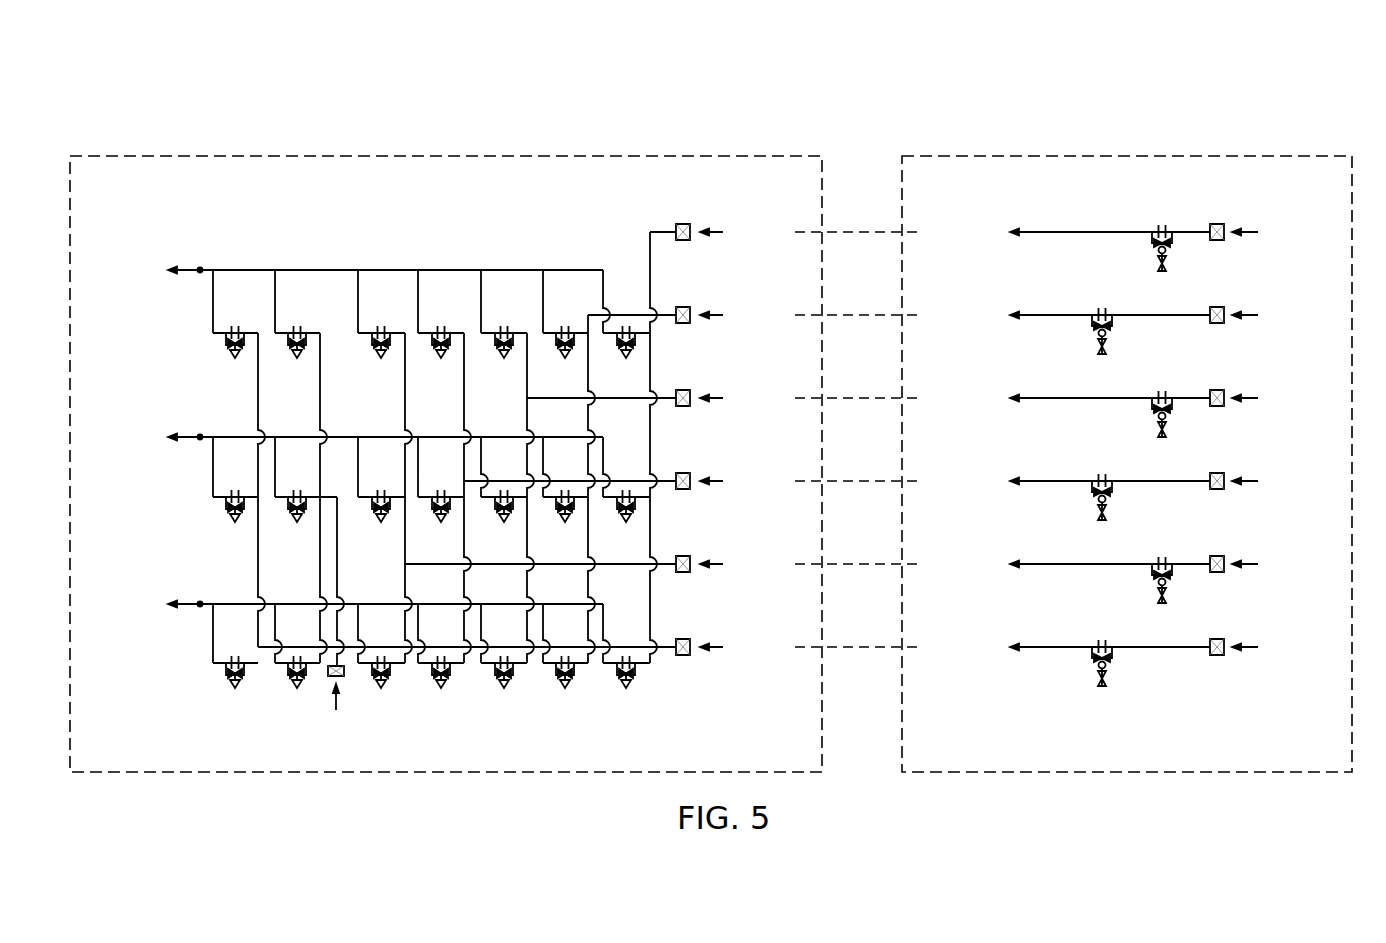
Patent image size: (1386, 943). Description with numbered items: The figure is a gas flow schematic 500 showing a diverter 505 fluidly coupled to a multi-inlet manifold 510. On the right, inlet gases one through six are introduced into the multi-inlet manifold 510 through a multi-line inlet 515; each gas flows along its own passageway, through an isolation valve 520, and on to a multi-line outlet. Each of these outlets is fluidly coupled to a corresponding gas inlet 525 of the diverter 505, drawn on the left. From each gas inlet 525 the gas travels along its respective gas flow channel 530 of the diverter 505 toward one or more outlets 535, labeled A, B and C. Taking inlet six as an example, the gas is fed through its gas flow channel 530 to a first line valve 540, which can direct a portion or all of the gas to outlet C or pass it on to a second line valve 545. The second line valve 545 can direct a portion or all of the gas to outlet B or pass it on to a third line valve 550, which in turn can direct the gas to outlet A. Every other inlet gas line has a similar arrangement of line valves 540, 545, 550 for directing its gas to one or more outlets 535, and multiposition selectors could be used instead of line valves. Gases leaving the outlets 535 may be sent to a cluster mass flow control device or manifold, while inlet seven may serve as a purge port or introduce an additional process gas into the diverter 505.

The gas flow schematic 500 is at (1303, 111).
The diverter 505 is at (665, 156).
The multi-inlet manifold 510 is at (1222, 156).
The multi-line inlet 515 is at (1218, 223).
The isolation valve 520 is at (1174, 241).
The gas inlet 525 is at (684, 223).
The gas flow channel 530 is at (637, 645).
The outlet 535 is at (130, 258).
The first line valve 540 is at (641, 342).
The second line valve 545 is at (641, 506).
The third line valve 550 is at (641, 672).